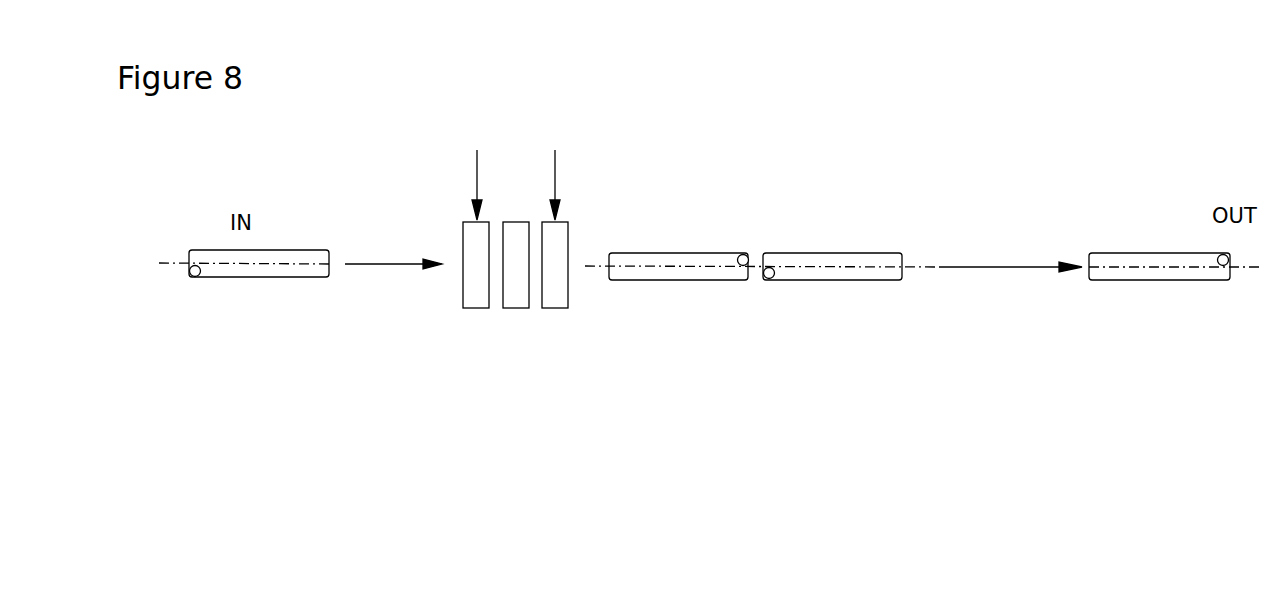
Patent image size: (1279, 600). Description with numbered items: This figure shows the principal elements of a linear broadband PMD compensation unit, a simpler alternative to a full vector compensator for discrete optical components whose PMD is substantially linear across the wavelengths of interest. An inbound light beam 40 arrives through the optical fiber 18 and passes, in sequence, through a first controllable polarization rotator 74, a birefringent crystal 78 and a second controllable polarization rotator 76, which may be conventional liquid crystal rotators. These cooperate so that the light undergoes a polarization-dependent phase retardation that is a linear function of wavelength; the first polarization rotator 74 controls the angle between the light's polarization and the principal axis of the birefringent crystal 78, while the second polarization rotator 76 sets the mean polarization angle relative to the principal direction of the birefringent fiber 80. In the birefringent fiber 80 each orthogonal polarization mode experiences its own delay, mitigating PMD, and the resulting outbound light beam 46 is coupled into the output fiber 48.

The optical fiber 18 is at (266, 279).
The inbound light beam 40 is at (395, 263).
The first controllable polarization rotator 74 is at (470, 309).
The birefringent crystal 78 is at (515, 309).
The second controllable polarization rotator 76 is at (555, 309).
The birefringent fiber 80 is at (710, 253).
The outbound light beam 46 is at (968, 266).
The output fiber 48 is at (1120, 253).